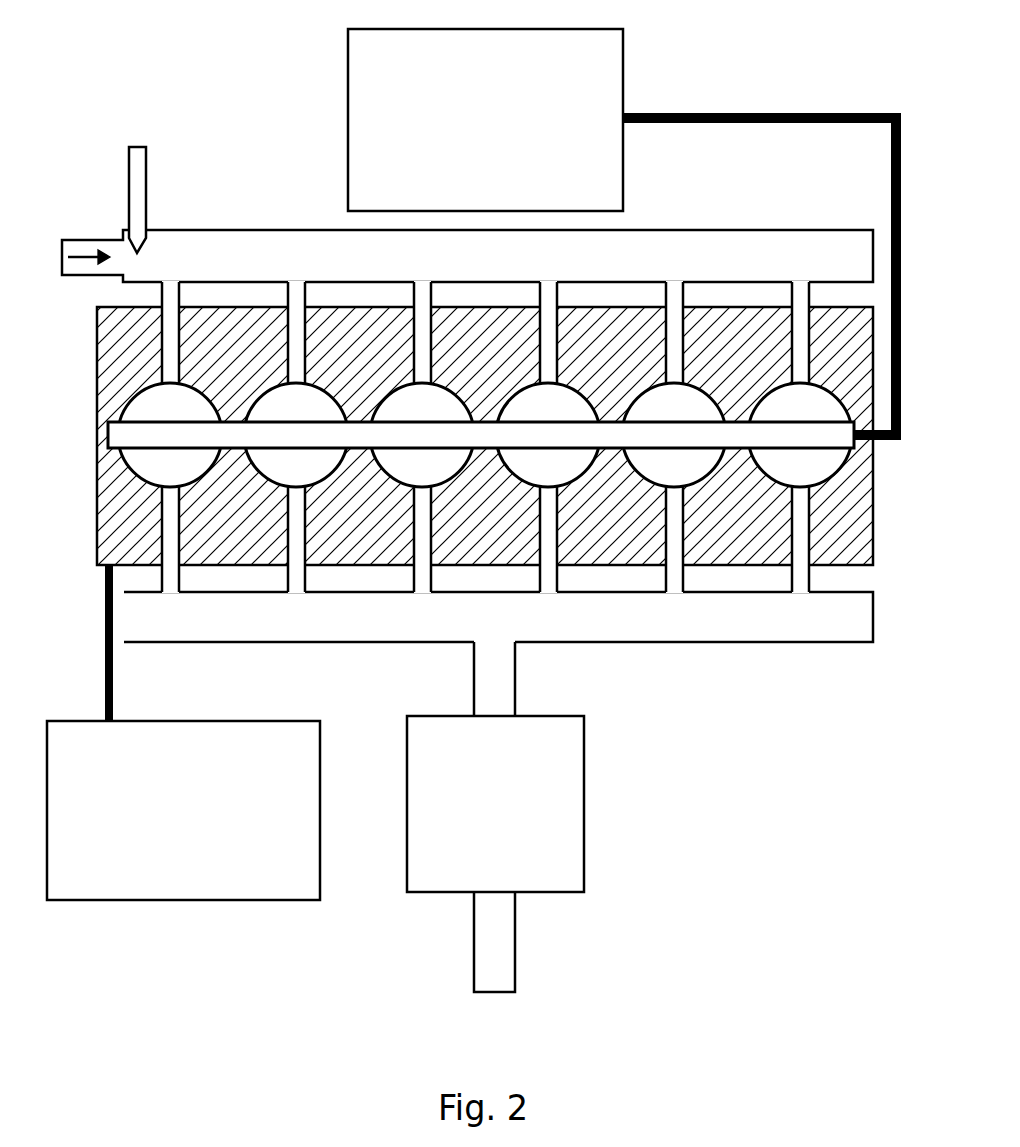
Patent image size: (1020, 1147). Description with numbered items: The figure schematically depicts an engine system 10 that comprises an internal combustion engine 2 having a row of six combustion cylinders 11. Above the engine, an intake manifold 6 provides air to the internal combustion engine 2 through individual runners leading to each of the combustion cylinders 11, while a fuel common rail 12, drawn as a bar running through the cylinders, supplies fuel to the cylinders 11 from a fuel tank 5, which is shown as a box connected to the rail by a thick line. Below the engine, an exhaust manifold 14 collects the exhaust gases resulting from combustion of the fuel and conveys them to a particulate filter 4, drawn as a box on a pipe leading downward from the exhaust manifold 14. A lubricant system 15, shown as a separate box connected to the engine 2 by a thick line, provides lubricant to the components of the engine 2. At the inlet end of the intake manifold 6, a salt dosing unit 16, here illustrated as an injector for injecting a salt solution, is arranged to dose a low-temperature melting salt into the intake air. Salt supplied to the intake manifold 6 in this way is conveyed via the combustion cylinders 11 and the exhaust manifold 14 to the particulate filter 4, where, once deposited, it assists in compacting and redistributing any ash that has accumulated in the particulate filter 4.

The internal combustion engine 2 is at (845, 528).
The particulate filter 4 is at (488, 818).
The fuel tank 5 is at (476, 132).
The intake manifold 6 is at (470, 264).
The engine system 10 is at (305, 203).
The combustion cylinders 11 is at (814, 416).
The fuel common rail 12 is at (468, 446).
The exhaust manifold 14 is at (481, 631).
The lubricant system 15 is at (169, 824).
The salt dosing unit 16 is at (134, 185).